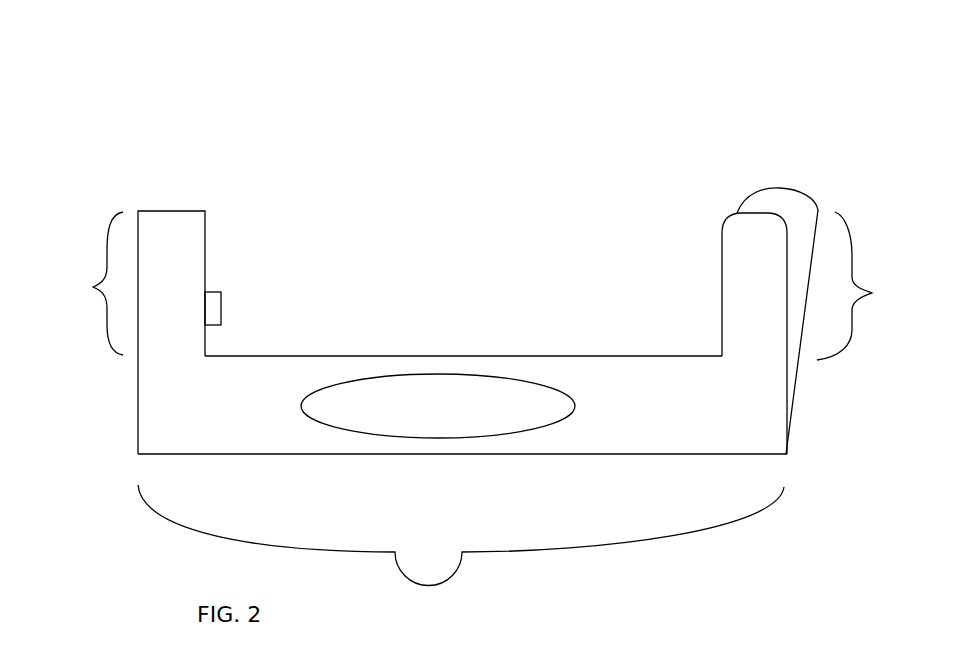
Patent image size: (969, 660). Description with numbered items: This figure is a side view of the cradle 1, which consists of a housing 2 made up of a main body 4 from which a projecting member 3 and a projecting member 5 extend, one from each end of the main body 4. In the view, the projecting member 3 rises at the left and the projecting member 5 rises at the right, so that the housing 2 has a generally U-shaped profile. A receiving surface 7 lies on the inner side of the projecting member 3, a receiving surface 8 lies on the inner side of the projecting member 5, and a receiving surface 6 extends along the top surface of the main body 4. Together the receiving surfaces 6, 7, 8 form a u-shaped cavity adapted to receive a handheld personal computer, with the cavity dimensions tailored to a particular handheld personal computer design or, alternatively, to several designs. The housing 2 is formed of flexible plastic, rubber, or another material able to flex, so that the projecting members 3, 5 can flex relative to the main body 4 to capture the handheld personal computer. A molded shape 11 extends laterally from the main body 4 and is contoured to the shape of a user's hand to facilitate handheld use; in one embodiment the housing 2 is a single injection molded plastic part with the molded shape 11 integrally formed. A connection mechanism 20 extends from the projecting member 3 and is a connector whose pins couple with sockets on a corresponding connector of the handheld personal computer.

The cradle 1 is at (381, 92).
The housing 2 is at (769, 431).
The projecting member 3 is at (79, 283).
The main body 4 is at (461, 552).
The projecting member 5 is at (858, 286).
The receiving surface 6 is at (483, 347).
The receiving surface 7 is at (214, 243).
The receiving surface 8 is at (712, 277).
The molded shape 11 is at (398, 390).
The connection mechanism 20 is at (212, 308).